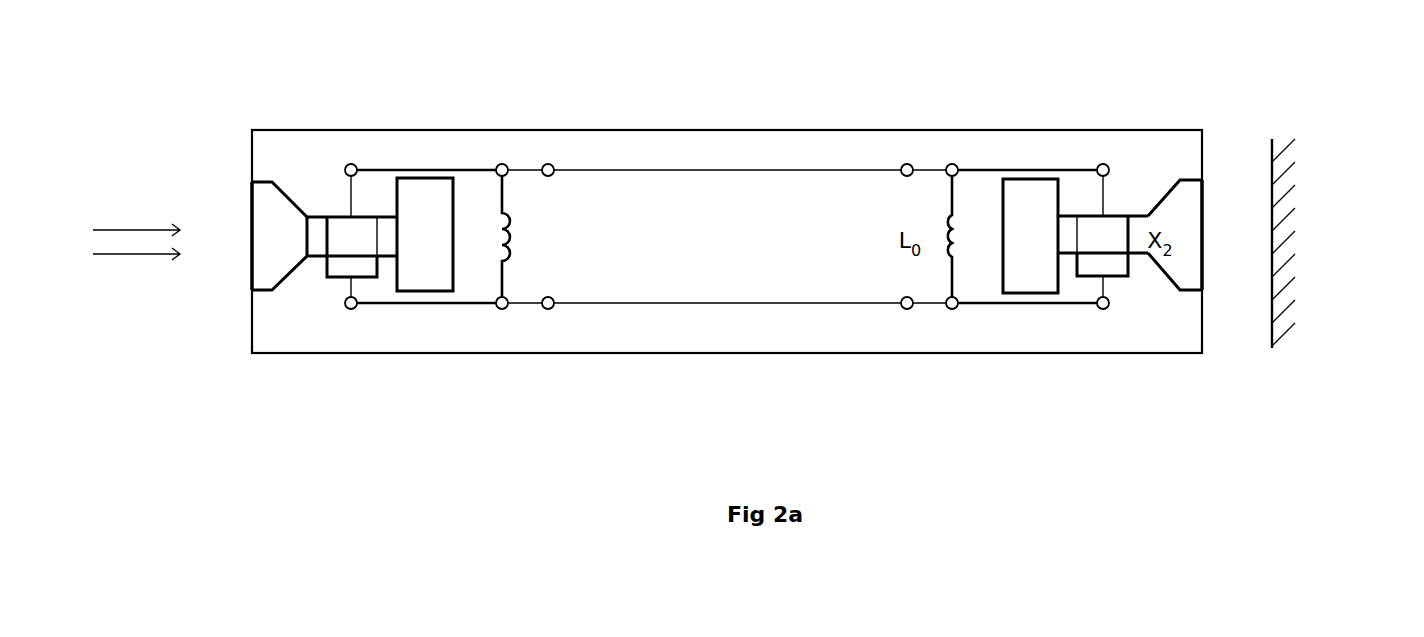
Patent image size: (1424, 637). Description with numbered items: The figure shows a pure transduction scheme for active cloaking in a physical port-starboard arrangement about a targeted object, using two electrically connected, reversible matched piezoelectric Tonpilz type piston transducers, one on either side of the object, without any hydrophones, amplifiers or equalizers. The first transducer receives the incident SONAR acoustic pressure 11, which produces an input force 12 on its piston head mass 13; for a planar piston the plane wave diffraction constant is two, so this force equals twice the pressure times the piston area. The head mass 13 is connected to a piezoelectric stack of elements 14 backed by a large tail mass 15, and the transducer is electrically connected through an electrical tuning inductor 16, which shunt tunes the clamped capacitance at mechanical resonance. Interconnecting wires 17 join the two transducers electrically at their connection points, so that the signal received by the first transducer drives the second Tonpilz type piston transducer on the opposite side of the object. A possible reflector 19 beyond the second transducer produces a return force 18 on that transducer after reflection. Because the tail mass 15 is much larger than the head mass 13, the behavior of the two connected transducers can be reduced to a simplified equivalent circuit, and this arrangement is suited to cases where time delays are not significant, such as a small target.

The acoustic pressure 11 is at (127, 197).
The force F1 12 is at (218, 208).
The piston head mass 13 is at (275, 208).
The piezoelectric stack of elements 14 is at (365, 232).
The tail mass 15 is at (433, 208).
The electrical tuning inductor 16 is at (522, 231).
The interconnecting wires 17 is at (752, 173).
The force F2 18 is at (1229, 218).
The reflector 19 is at (1263, 123).